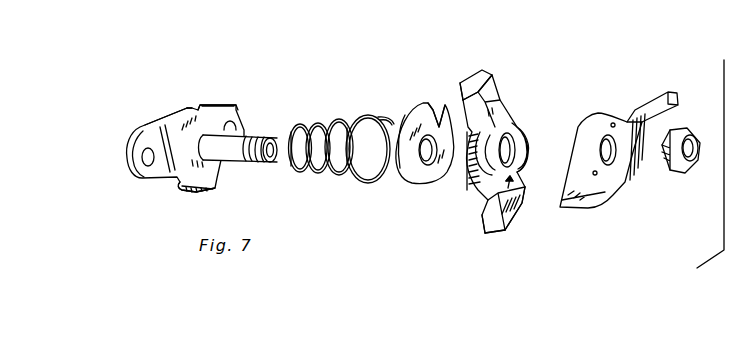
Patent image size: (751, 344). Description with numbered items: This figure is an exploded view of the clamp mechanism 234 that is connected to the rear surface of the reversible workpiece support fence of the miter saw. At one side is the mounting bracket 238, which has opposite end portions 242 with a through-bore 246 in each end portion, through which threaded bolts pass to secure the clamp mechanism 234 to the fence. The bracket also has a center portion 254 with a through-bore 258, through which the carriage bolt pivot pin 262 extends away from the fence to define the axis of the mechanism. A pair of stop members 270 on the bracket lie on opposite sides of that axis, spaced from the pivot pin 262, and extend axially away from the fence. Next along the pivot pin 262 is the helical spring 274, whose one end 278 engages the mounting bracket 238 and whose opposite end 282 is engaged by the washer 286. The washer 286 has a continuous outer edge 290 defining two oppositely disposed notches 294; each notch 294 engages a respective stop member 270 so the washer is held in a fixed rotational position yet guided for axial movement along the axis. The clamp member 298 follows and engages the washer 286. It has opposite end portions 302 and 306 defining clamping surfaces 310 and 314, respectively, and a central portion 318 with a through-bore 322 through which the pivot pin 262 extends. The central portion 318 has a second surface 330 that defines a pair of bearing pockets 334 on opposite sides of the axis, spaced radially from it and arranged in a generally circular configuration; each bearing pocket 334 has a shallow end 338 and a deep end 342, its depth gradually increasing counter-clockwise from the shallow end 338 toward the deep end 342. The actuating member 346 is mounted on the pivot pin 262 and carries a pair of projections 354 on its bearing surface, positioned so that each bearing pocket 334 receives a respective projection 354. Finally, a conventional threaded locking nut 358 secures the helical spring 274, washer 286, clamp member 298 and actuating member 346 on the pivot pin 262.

The clamp mechanism 234 is at (275, 78).
The mounting bracket 238 is at (157, 123).
The end portions 242 is at (143, 178).
The through-bore 246 is at (138, 162).
The center portion 254 is at (193, 102).
The through-bore 258 is at (157, 142).
The carriage bolt pivot pin 262 is at (247, 163).
The stop members 270 is at (220, 103).
The helical spring 274 is at (375, 112).
The end 278 is at (293, 167).
The end 282 is at (377, 185).
The washer 286 is at (423, 203).
The continuous outer edge 290 is at (433, 187).
The notches 294 is at (435, 103).
The clamp member 298 is at (495, 88).
The end portion 302 is at (487, 67).
The end portion 306 is at (497, 230).
The clamping surface 310 is at (452, 90).
The clamping surface 314 is at (482, 227).
The central portion 318 is at (512, 108).
The through-bore 322 is at (525, 130).
The second surface 330 is at (518, 207).
The bearing pockets 334 is at (527, 137).
The shallow end 338 is at (523, 167).
The deep end 342 is at (517, 120).
The actuating member 346 is at (625, 175).
The projections 354 is at (613, 123).
The threaded locking nut 358 is at (702, 119).